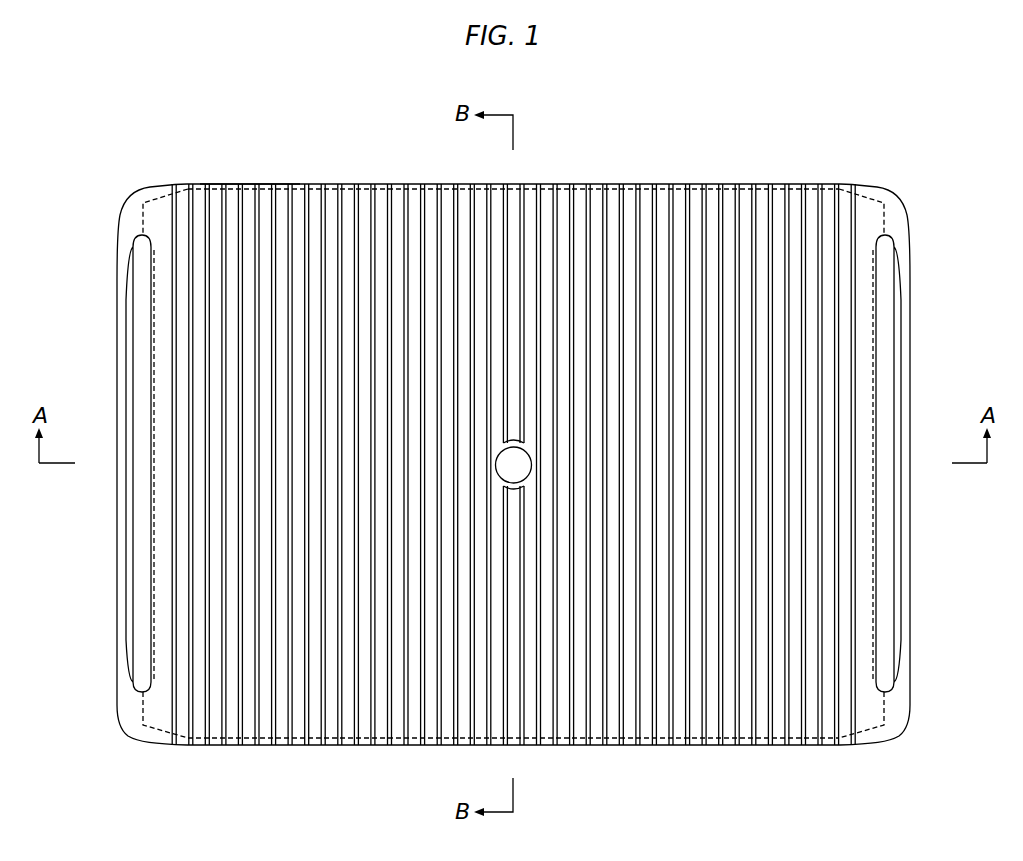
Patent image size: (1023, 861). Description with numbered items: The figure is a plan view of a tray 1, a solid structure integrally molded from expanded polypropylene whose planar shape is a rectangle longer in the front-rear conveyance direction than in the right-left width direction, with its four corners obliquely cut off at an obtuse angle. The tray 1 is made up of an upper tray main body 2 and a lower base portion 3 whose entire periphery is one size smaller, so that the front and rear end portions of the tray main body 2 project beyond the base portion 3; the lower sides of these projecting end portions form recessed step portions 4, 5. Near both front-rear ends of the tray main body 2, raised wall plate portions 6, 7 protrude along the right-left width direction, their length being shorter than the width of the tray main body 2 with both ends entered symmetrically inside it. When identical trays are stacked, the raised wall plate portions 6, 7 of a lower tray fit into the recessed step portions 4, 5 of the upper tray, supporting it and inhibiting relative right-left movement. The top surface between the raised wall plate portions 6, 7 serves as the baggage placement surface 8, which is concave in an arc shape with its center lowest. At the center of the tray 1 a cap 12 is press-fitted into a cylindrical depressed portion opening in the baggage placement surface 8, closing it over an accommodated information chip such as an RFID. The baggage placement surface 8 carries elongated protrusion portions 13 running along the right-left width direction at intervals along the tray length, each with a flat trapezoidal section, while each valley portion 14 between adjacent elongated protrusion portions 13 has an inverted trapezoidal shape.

The tray 1 is at (671, 170).
The tray main body 2 is at (312, 176).
The base portion 3 is at (365, 178).
The recessed step portion 4 is at (130, 366).
The recessed step portion 5 is at (896, 370).
The raised wall plate portion 6 is at (135, 518).
The raised wall plate portion 7 is at (888, 526).
The baggage placement surface 8 is at (286, 605).
The cap 12 is at (520, 466).
The elongated protrusion portion 13 is at (296, 722).
The valley portion 14 is at (596, 200).